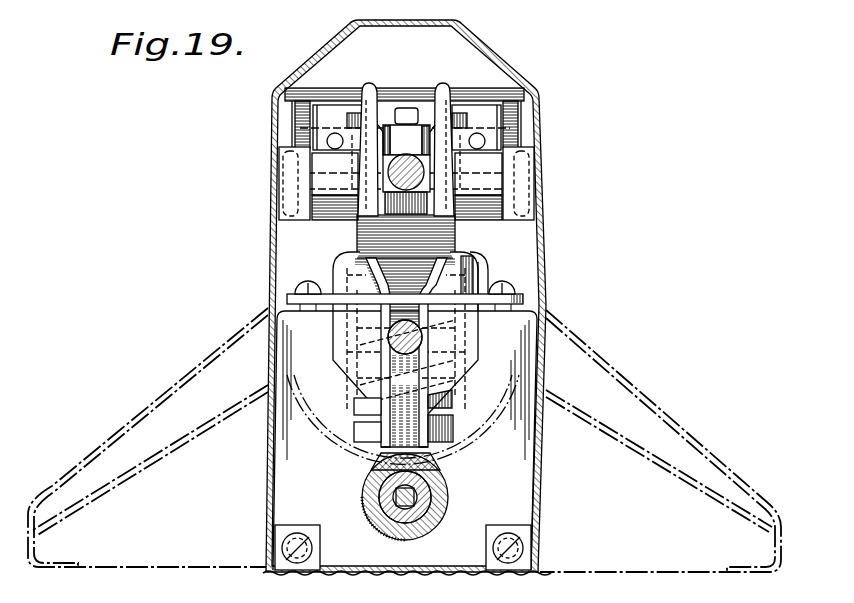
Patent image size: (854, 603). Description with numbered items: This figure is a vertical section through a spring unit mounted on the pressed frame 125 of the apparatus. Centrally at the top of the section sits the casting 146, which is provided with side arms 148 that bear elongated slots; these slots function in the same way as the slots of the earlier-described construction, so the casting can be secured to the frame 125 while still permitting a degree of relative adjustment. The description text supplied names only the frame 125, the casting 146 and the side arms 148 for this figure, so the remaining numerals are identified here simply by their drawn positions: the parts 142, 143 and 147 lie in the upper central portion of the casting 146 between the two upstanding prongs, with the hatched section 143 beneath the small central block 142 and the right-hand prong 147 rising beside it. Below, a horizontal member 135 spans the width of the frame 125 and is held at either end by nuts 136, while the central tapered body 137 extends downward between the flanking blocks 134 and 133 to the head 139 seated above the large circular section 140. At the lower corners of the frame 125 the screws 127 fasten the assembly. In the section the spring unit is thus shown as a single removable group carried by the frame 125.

The frame 125 is at (281, 455).
The screw 127 is at (314, 536).
The block 133 is at (441, 438).
The block 134 is at (355, 399).
The bar 135 is at (295, 292).
The nut 136 is at (304, 289).
The cam body 137 is at (425, 305).
The bolt head 139 is at (383, 458).
The disc 140 is at (437, 491).
The center block 142 is at (404, 138).
The pivot pin 143 is at (386, 161).
The casting 146 is at (340, 107).
The prong 147 is at (457, 107).
The side arms 148 is at (304, 218).